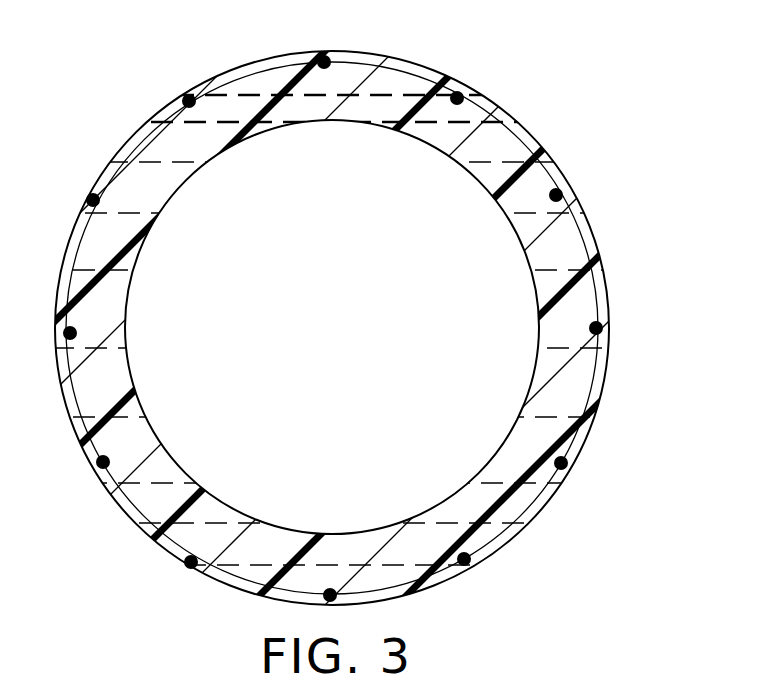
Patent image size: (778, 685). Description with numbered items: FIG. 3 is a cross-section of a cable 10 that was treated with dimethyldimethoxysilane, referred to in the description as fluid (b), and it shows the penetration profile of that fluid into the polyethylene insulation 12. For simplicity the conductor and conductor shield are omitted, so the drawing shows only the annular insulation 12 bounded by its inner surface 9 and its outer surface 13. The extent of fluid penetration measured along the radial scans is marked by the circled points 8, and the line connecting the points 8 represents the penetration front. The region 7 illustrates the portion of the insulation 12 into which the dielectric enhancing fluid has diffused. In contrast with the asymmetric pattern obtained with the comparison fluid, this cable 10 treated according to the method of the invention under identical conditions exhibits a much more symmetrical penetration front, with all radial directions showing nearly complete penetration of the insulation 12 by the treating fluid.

The region 7 is at (553, 248).
The circled points 8 is at (189, 101).
The inner surface 9 is at (136, 366).
The cable 10 is at (389, 342).
The insulation 12 is at (598, 283).
The outer surface 13 is at (513, 533).